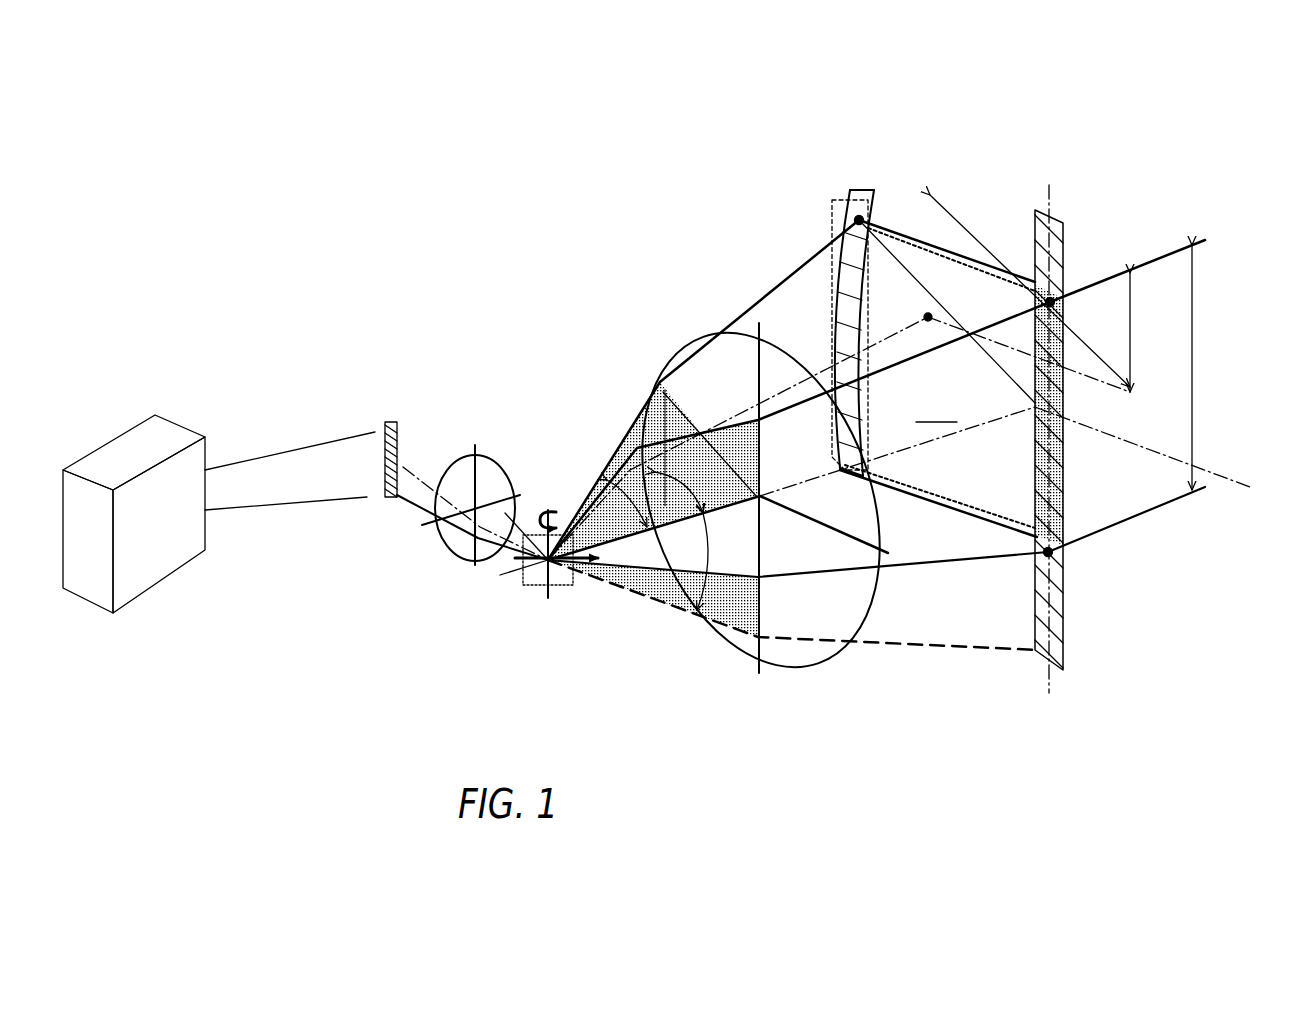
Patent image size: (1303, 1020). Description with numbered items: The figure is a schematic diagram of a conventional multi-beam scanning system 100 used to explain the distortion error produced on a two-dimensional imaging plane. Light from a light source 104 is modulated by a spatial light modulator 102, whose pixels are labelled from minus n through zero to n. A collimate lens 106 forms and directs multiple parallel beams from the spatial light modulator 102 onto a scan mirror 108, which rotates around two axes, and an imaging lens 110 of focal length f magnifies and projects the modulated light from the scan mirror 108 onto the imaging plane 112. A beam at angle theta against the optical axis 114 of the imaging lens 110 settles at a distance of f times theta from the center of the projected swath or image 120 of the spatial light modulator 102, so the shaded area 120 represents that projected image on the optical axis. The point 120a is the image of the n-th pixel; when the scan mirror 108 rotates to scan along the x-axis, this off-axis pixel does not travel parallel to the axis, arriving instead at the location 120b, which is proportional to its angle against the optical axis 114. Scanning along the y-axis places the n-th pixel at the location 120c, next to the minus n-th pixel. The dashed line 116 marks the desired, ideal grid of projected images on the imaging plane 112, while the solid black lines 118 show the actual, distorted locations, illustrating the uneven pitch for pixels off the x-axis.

The scanning system 100 is at (357, 185).
The spatial light modulator 102 is at (392, 420).
The light source 104 is at (142, 432).
The collimate lens 106 is at (468, 450).
The scan mirror 108 is at (545, 590).
The imaging lens 110 is at (714, 331).
The imaging plane 112 is at (938, 378).
The optical axis 114 is at (937, 446).
The dashed line 116 is at (833, 208).
The solid black lines 118 is at (856, 212).
The swath or projected image 120 is at (1064, 447).
The image of the n-th pixel 120a is at (1053, 300).
The scanned location of the n-th pixel 120b is at (862, 217).
The y-scanned location of the n-th pixel 120c is at (1055, 556).